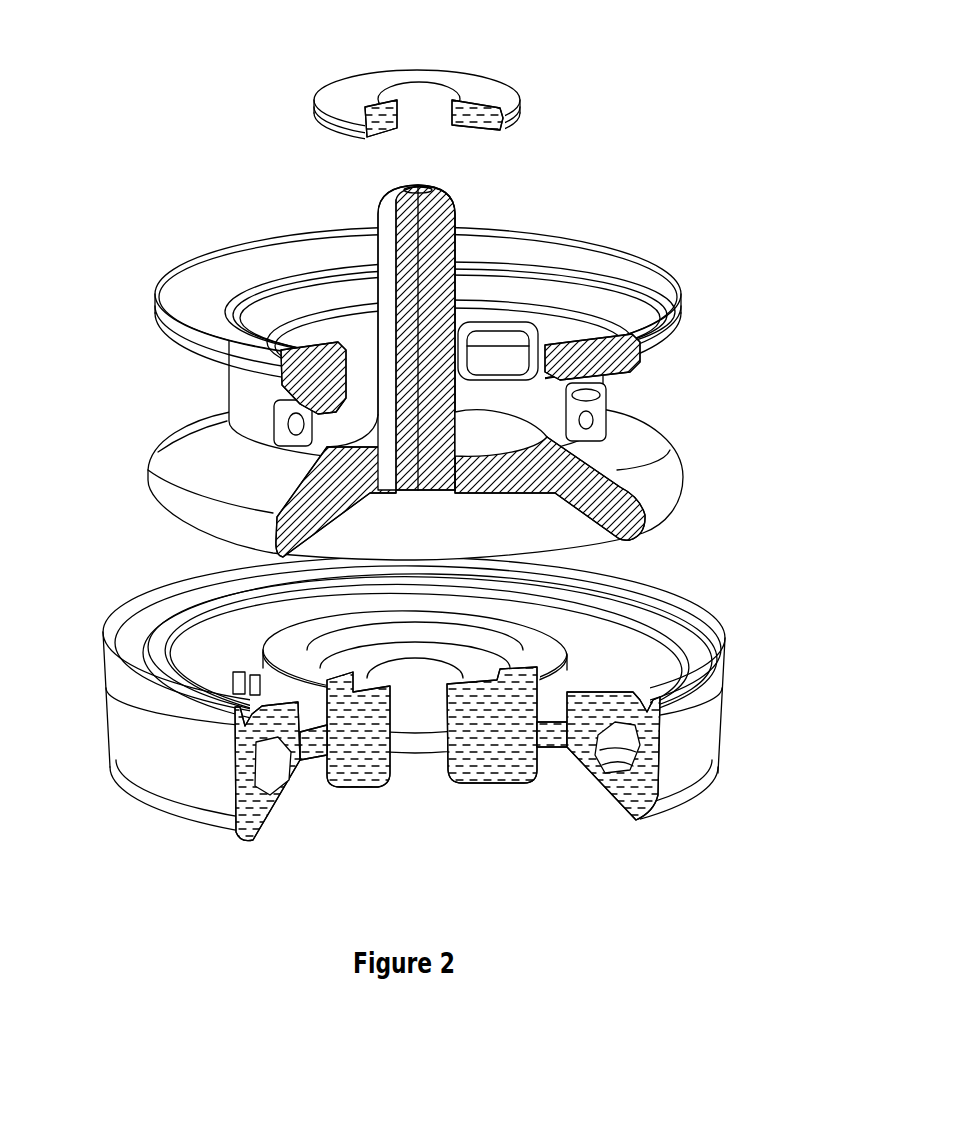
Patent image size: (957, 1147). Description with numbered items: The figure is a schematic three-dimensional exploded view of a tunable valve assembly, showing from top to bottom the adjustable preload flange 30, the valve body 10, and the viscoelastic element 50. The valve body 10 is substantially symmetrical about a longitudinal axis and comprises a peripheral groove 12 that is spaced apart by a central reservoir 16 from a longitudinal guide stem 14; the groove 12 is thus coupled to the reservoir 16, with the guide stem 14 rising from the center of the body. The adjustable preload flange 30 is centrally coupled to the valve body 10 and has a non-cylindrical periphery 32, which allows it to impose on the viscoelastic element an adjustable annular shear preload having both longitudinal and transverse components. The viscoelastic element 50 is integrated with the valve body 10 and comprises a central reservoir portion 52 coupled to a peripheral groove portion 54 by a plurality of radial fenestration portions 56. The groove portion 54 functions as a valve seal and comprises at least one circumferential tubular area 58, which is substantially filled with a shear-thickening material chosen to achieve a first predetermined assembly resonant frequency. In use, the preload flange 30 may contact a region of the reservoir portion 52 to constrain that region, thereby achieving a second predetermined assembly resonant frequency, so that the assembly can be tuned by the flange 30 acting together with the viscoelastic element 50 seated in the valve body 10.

The valve body 10 is at (507, 500).
The groove 12 is at (667, 390).
The guide stem 14 is at (463, 212).
The reservoir 16 is at (328, 223).
The adjustable preload flange 30 is at (512, 72).
The non-cylindrical periphery 32 is at (510, 132).
The viscoelastic element 50 is at (732, 725).
The reservoir portion 52 is at (462, 775).
The groove portion 54 is at (613, 813).
The radial fenestration portions 56 is at (555, 750).
The circumferential tubular area 58 is at (603, 742).